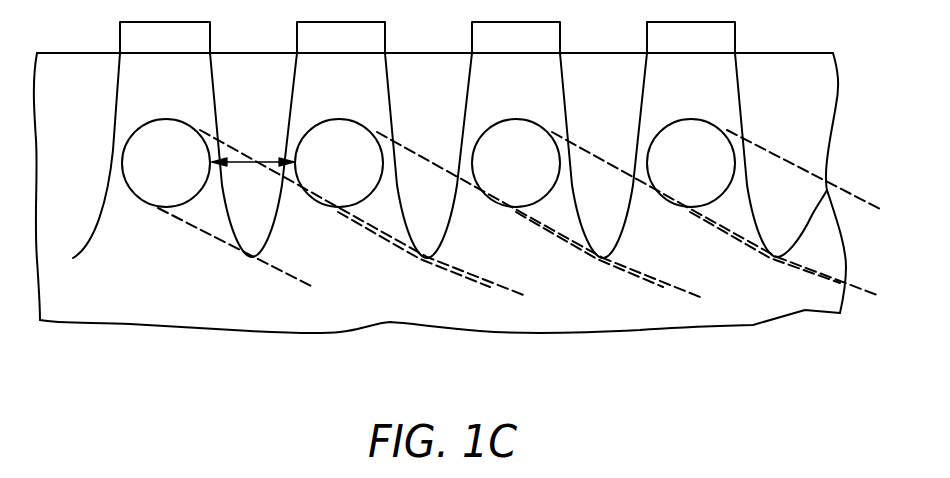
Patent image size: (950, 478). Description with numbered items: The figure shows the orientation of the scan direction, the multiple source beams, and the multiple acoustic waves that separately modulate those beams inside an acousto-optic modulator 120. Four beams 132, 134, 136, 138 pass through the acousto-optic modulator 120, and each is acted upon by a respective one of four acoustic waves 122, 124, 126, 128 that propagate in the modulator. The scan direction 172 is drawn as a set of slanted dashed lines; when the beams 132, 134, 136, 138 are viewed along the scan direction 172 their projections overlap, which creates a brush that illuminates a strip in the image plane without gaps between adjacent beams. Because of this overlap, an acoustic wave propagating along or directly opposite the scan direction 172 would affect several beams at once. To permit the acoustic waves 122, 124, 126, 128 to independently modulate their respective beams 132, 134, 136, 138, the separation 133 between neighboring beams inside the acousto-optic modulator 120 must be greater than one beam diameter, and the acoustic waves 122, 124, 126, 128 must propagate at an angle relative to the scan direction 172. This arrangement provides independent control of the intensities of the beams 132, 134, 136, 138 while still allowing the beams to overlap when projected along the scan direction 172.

The acousto-optic modulator 120 is at (95, 100).
The acoustic wave 122 is at (185, 100).
The acoustic wave 124 is at (361, 100).
The acoustic wave 126 is at (543, 100).
The acoustic wave 128 is at (713, 100).
The beam 132 is at (180, 173).
The separation 133 is at (280, 157).
The beam 134 is at (360, 173).
The beam 136 is at (538, 173).
The beam 138 is at (712, 173).
The scan direction 172 is at (213, 238).